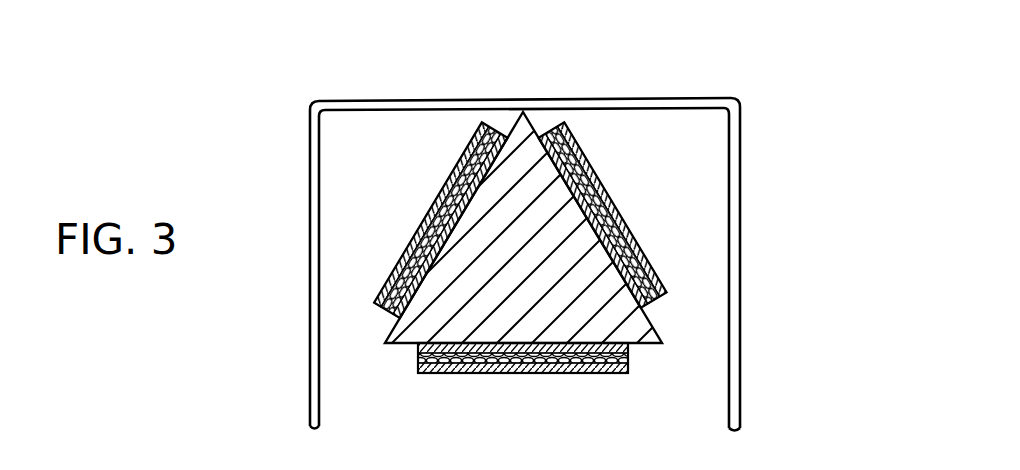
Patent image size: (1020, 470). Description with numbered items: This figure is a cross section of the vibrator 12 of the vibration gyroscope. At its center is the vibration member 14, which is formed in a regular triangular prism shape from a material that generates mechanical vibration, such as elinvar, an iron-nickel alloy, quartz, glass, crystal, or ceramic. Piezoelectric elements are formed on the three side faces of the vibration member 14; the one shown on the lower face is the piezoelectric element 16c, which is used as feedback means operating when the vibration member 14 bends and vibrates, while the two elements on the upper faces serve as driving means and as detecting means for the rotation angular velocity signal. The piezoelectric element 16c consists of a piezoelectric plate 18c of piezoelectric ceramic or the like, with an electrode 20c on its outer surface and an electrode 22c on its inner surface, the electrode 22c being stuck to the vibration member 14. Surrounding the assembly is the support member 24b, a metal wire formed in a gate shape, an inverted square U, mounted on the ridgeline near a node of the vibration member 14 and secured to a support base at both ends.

The vibrator 12 is at (308, 88).
The vibration member 14 is at (625, 326).
The piezoelectric element 16c is at (438, 380).
The piezoelectric plate 18c is at (518, 374).
The electrode 20c is at (464, 374).
The electrode 22c is at (573, 374).
The support member 24b is at (742, 158).